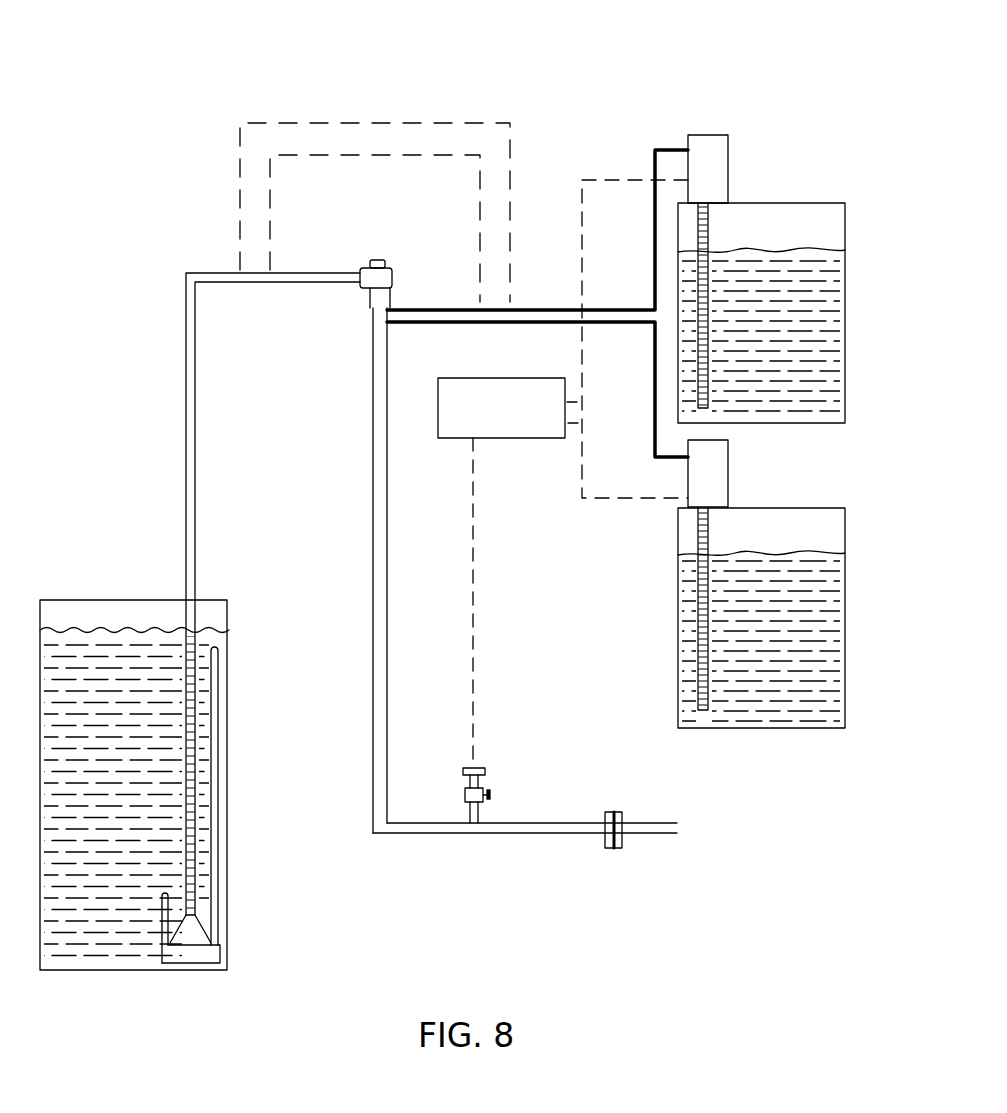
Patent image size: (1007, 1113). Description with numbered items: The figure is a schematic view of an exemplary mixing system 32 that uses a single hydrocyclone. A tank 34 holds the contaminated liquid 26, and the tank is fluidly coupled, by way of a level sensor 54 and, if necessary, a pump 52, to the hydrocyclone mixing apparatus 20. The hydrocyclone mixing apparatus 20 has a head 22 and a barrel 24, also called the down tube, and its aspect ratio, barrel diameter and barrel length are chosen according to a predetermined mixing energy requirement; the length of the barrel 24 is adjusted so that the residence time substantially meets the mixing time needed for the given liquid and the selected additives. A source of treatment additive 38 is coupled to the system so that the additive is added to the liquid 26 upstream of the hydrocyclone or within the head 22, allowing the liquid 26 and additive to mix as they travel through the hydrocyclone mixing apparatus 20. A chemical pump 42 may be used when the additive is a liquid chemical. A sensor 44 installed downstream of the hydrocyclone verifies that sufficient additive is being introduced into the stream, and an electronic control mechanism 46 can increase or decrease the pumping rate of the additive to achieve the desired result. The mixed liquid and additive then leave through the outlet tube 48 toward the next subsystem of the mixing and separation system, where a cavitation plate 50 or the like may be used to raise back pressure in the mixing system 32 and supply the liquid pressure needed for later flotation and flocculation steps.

The hydrocyclone mixing apparatus 20 is at (347, 504).
The head 22 is at (370, 277).
The barrel 24 is at (373, 653).
The contaminated liquid 26 is at (88, 653).
The mixing system 32 is at (141, 110).
The tank 34 is at (127, 598).
The source of treatment additive 38 is at (763, 258).
The chemical pump 42 is at (712, 148).
The sensor 44 is at (483, 783).
The electronic control mechanism 46 is at (537, 395).
The outlet tube 48 is at (432, 833).
The cavitation plate 50 is at (605, 848).
The pump 52 is at (188, 948).
The level sensor 54 is at (163, 920).